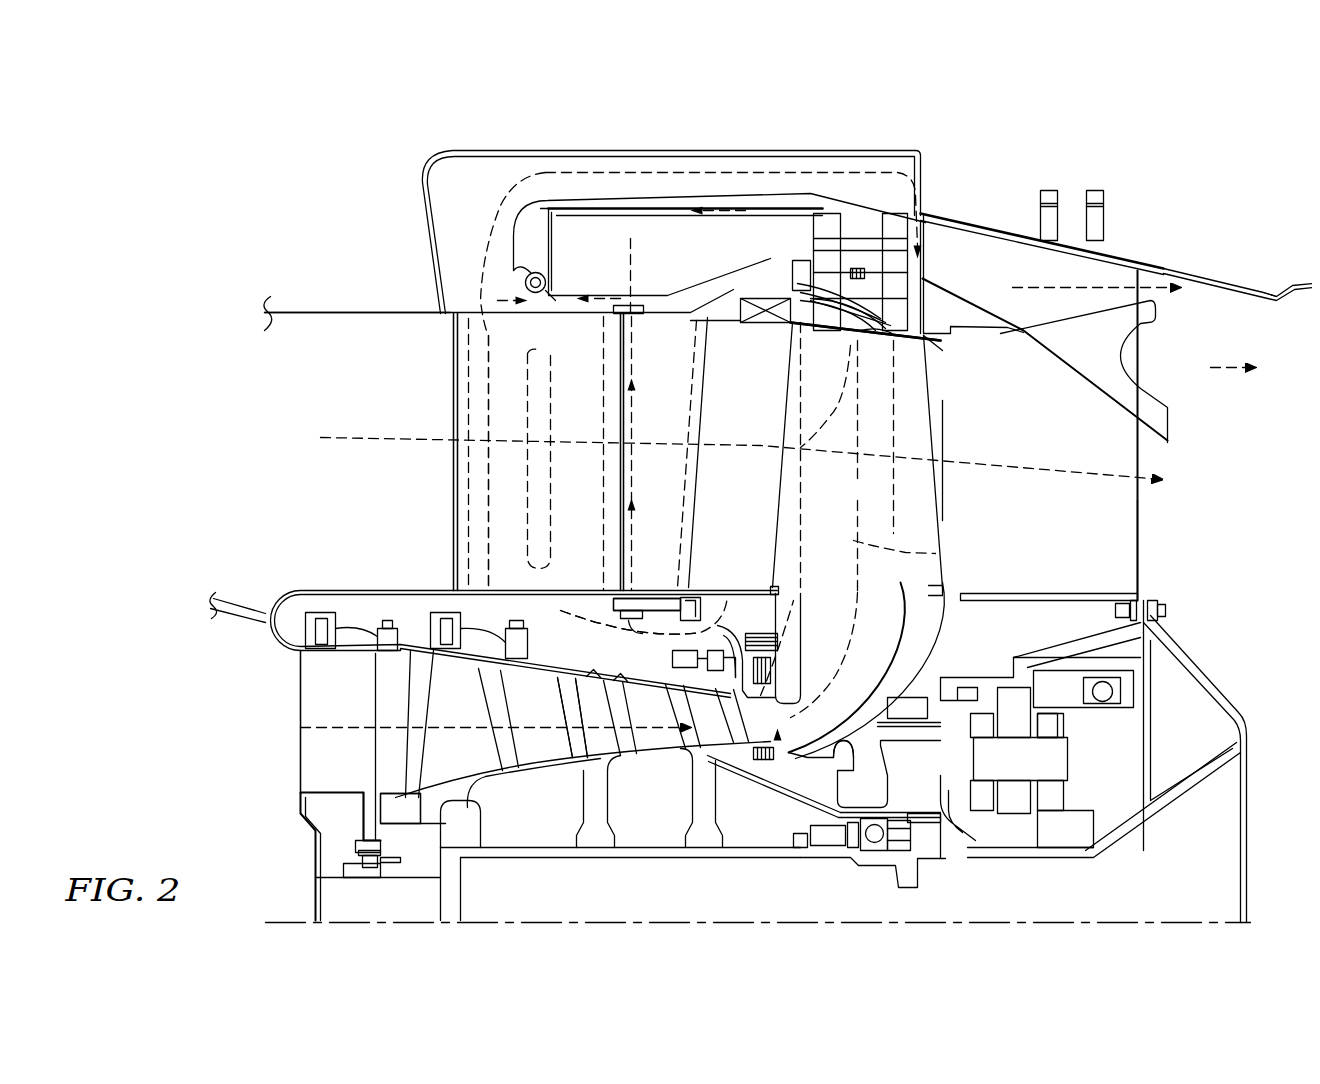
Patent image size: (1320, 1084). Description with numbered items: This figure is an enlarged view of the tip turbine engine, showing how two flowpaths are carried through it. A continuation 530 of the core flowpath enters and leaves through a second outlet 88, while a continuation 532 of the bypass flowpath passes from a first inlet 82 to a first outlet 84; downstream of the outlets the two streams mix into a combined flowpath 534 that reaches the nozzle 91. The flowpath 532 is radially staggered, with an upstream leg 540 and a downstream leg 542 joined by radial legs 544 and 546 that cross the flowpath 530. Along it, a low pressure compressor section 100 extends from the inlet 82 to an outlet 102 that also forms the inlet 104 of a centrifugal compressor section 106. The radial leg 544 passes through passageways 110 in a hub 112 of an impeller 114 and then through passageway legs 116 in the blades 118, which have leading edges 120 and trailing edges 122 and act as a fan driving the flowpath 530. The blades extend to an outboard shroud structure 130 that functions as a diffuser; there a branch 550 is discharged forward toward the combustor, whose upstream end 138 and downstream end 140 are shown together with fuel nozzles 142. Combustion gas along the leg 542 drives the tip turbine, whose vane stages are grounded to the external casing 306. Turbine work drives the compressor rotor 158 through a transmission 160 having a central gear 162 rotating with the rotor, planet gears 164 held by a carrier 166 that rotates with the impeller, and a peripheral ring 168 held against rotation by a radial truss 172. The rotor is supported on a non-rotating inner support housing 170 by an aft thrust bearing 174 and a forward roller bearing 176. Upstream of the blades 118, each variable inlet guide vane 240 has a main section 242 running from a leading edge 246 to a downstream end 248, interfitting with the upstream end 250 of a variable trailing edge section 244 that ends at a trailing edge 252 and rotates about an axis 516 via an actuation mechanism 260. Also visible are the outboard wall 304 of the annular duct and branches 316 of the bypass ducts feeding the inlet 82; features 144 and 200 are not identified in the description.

The first inlet 82 is at (276, 748).
The first outlet 84 is at (1168, 270).
The second outlet 88 is at (1163, 533).
The nozzle 91 is at (1266, 283).
The low pressure compressor section 100 is at (509, 794).
The outlet of low pressure compressor 102 is at (777, 742).
The inlet of centrifugal compressor section 104 is at (784, 737).
The centrifugal compressor section 106 is at (952, 500).
The passageways 110 is at (888, 677).
The hub 112 is at (910, 652).
The impeller 114 is at (945, 607).
The passageway legs 116 is at (846, 527).
The blades 118 is at (918, 449).
The leading edges 120 is at (773, 428).
The trailing edges 122 is at (932, 400).
The outboard shroud structure 130 is at (928, 340).
The upstream end of combustor 138 is at (540, 246).
The downstream end of combustor 140 is at (778, 232).
The nozzles 142 is at (508, 277).
The nacelle inner wall 144 is at (600, 208).
The compressor rotor 158 is at (799, 806).
The transmission 160 is at (1100, 783).
The central gear 162 is at (1017, 845).
The planet gears 164 is at (1022, 722).
The carrier 166 is at (960, 793).
The peripheral ring 168 is at (1027, 673).
The inner support housing 170 is at (716, 858).
The radial truss 172 is at (1200, 668).
The aft thrust bearing 174 is at (874, 858).
The forward roller bearing 176 is at (370, 870).
The seal assembly 200 is at (880, 337).
The vane 240 is at (510, 515).
The main section 242 is at (458, 545).
The variable trailing edge section 244 is at (668, 383).
The leading edge 246 is at (456, 452).
The downstream end 248 is at (632, 395).
The upstream end 250 is at (603, 456).
The trailing edge 252 is at (640, 428).
The actuation mechanism 260 is at (662, 590).
The outboard wall 304 is at (315, 310).
The external casing 306 is at (790, 155).
The branches 316 is at (240, 600).
The axis 516 is at (640, 262).
The continuation of core flowpath 530 is at (342, 437).
The continuation of bypass flowpath 532 is at (1100, 287).
The combined flowpath 534 is at (1245, 370).
The upstream leg 540 is at (537, 730).
The downstream leg 542 is at (942, 255).
The radial leg 544 is at (935, 553).
The radial leg 546 is at (725, 598).
The branch 550 is at (829, 466).